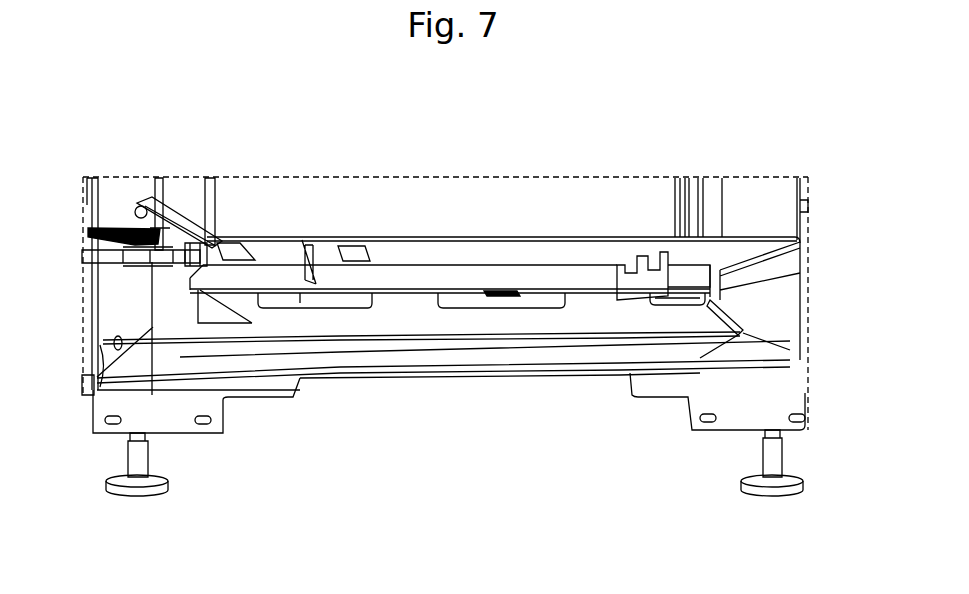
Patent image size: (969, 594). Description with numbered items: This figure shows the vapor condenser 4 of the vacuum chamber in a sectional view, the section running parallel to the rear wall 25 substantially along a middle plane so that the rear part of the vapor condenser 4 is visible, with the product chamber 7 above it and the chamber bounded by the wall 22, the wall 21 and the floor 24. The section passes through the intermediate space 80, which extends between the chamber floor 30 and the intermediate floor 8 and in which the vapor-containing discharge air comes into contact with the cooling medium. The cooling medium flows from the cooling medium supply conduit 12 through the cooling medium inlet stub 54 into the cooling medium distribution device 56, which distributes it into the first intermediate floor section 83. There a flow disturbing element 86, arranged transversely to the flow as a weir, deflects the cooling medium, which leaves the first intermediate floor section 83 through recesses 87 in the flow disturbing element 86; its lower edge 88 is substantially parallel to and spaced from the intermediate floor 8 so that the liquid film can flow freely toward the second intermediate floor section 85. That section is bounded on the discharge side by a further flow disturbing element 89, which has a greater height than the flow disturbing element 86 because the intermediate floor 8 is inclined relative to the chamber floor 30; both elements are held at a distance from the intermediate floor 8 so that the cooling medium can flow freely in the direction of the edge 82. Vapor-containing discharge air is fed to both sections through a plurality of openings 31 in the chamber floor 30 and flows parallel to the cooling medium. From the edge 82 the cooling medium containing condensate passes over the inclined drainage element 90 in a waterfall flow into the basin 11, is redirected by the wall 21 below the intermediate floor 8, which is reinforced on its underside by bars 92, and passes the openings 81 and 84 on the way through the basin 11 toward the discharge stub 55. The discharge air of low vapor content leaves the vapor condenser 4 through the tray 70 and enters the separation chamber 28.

The vapor condenser 4 is at (261, 318).
The product chamber 7 is at (477, 198).
The intermediate floor 8 is at (389, 293).
The basin 11 is at (571, 358).
The cooling medium supply conduit 12 is at (82, 262).
The wall 21 is at (801, 212).
The wall 22 is at (197, 190).
The floor 24 is at (491, 378).
The rear wall 25 is at (586, 221).
The separation chamber 28 is at (98, 205).
The chamber floor 30 is at (427, 232).
The openings 31 is at (368, 245).
The cooling medium inlet stub 54 is at (172, 215).
The discharge stub 55 is at (88, 367).
The cooling medium distribution device 56 is at (207, 250).
The tray 70 is at (118, 227).
The intermediate space 80 is at (600, 278).
The opening 81 is at (511, 292).
The downstream edge 82 is at (710, 300).
The first intermediate floor section 83 is at (271, 290).
The opening 84 is at (668, 308).
The second intermediate floor section 85 is at (448, 282).
The flow disturbing element 86 is at (296, 292).
The recesses 87 is at (306, 270).
The lower edge 88 is at (315, 286).
The flow disturbing element 89 is at (661, 275).
The drainage element 90 is at (733, 318).
The bars 92 is at (598, 323).